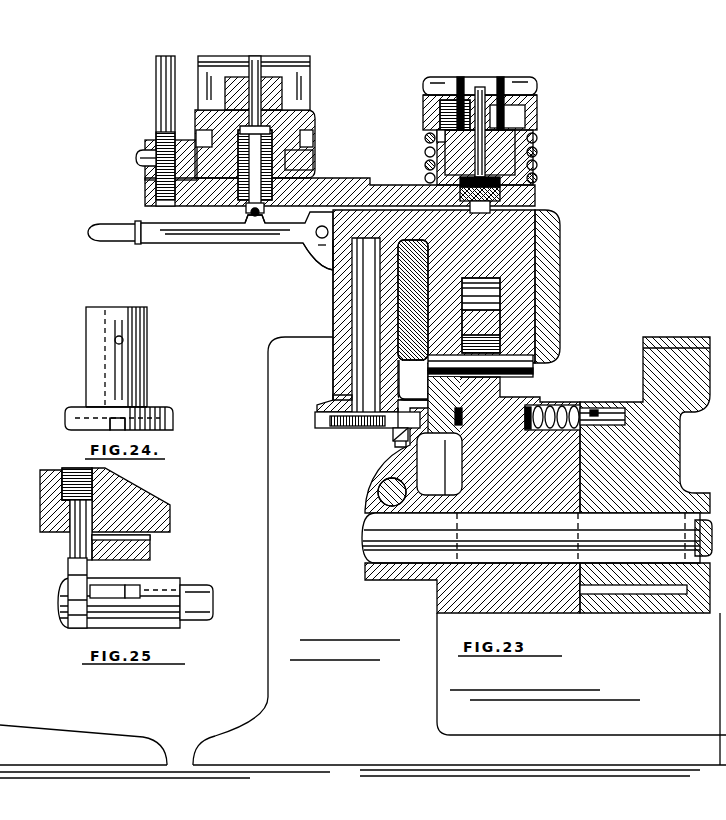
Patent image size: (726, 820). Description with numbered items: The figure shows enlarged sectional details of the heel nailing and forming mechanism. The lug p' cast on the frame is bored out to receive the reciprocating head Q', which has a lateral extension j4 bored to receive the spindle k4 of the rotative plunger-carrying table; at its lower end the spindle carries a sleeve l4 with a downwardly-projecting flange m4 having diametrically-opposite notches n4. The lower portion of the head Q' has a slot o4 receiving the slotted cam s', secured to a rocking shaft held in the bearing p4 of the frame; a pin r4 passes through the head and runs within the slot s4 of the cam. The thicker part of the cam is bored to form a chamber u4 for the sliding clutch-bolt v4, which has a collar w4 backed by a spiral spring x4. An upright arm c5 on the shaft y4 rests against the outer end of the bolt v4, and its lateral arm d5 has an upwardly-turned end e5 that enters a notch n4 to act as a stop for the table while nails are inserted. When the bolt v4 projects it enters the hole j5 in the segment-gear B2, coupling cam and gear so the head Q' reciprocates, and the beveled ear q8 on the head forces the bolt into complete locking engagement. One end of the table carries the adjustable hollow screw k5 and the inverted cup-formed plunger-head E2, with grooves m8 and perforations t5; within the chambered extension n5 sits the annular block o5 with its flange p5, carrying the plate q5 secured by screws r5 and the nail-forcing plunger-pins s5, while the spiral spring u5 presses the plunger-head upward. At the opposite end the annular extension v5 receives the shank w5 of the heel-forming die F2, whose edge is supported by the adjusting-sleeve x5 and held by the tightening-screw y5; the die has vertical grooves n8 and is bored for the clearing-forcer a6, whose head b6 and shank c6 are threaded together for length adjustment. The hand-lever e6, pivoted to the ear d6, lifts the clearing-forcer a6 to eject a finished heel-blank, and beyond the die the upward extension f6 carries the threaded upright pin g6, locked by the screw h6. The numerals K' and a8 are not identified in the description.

In FIG. 23, the hand-lever e6 is at (190, 232).
In FIG. 23, the hollow central tightening-screw y5 is at (249, 218).
In FIG. 23, the ear d6 is at (322, 225).
In FIG. 23, the lateral extension j4 is at (325, 262).
In FIG. 23, the valve base plate K' is at (340, 183).
In FIG. 23, the reciprocating head Q' is at (456, 299).
In FIG. 23, the spindle k4 is at (352, 285).
In FIG. 23, the sleeve l4 is at (345, 380).
In FIG. 24, the sleeve l4 is at (96, 366).
In FIG. 23, the slot o4 is at (485, 298).
In FIG. 23, the slotted cam s' is at (520, 322).
In FIG. 25, the slotted cam s' is at (131, 500).
In FIG. 23, the slot of the cam s4 is at (495, 343).
In FIG. 23, the pin r4 is at (533, 366).
In FIG. 23, the segment-gear B2 is at (671, 428).
In FIG. 23, the upwardly-turned end e5 is at (439, 464).
In FIG. 25, the upwardly-turned end e5 is at (135, 588).
In FIG. 23, the passage a8 is at (437, 467).
In FIG. 23, the shaft y4 is at (378, 492).
In FIG. 25, the shaft y4 is at (178, 581).
In FIG. 23, the spiral spring x4 is at (528, 408).
In FIG. 23, the chamber u4 is at (550, 408).
In FIG. 25, the chamber u4 is at (77, 478).
In FIG. 23, the sliding clutch-bolt v4 is at (585, 410).
In FIG. 25, the sliding clutch-bolt v4 is at (70, 538).
In FIG. 23, the hole j5 is at (596, 411).
In FIG. 23, the notches n4 is at (430, 398).
In FIG. 24, the notches n4 is at (118, 418).
In FIG. 23, the flange m4 is at (393, 432).
In FIG. 24, the flange m4 is at (82, 425).
In FIG. 23, the laterally-extending arm d5 is at (395, 438).
In FIG. 25, the laterally-extending arm d5 is at (108, 588).
In FIG. 23, the upright arm c5 is at (405, 442).
In FIG. 25, the upright arm c5 is at (68, 572).
In FIG. 23, the lug p' is at (537, 538).
In FIG. 23, the bearing p4 is at (372, 572).
In FIG. 23, the upward extension f6 is at (147, 172).
In FIG. 23, the upright pin g6 is at (158, 100).
In FIG. 23, the screw h6 is at (137, 156).
In FIG. 23, the adjusting-sleeve x5 is at (308, 118).
In FIG. 23, the annular upward extension v5 is at (285, 155).
In FIG. 23, the shank w5 is at (272, 135).
In FIG. 23, the heel-forming die F2 is at (298, 100).
In FIG. 23, the vertical grooves n8 is at (302, 76).
In FIG. 23, the head portion b6 is at (256, 78).
In FIG. 23, the shank portion c6 is at (244, 130).
In FIG. 23, the clearing-forcer a6 is at (259, 210).
In FIG. 23, the heel-nailing plunger-head E2 is at (537, 105).
In FIG. 23, the plate q5 is at (440, 110).
In FIG. 23, the chambered upward extension n5 is at (515, 148).
In FIG. 23, the grooves m8 is at (520, 79).
In FIG. 23, the perforations t5 is at (525, 160).
In FIG. 23, the nail-forcing plunger-pins s5 is at (528, 97).
In FIG. 23, the annular block o5 is at (500, 143).
In FIG. 23, the screws r5 is at (530, 126).
In FIG. 23, the encircling-flange p5 is at (425, 152).
In FIG. 23, the spiral spring u5 is at (425, 170).
In FIG. 23, the adjustable hollow screw k5 is at (505, 179).
In FIG. 25, the collar w4 is at (66, 492).
In FIG. 25, the downwardly-projecting ear q8 is at (150, 548).